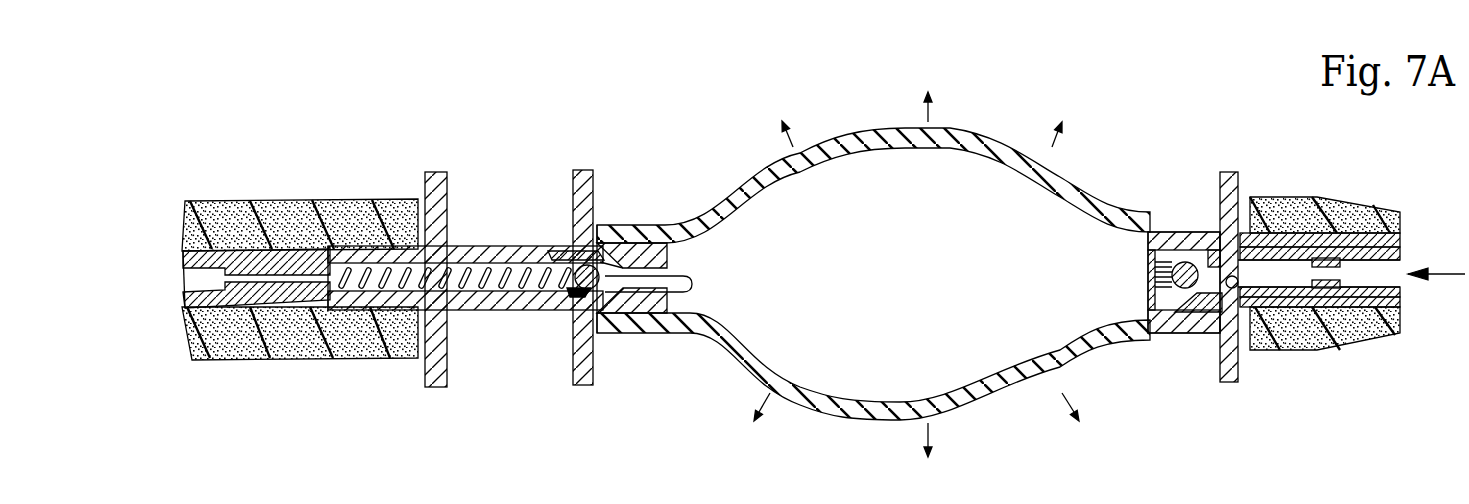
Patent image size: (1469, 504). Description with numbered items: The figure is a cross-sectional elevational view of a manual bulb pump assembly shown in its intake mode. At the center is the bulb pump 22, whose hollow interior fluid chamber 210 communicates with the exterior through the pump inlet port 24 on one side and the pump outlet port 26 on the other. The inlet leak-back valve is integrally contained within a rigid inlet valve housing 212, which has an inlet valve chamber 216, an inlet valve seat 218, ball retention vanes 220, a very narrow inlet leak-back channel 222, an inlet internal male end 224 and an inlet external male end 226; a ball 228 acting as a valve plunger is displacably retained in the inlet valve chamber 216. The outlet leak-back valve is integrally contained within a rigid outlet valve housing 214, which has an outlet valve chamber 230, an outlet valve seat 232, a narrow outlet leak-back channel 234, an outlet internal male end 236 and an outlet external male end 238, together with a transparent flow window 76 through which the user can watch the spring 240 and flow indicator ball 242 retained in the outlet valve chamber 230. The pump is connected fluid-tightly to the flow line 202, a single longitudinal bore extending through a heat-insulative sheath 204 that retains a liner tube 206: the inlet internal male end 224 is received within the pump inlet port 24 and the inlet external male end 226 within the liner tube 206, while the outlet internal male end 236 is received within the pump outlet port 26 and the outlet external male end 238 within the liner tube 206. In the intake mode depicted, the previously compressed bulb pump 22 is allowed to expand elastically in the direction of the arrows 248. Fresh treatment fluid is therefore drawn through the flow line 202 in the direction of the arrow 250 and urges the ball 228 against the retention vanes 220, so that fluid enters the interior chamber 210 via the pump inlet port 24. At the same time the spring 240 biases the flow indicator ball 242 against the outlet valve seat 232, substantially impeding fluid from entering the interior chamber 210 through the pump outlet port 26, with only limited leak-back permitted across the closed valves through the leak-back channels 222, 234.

The bulb pump 22 is at (958, 130).
The pump inlet port 24 is at (1205, 340).
The pump outlet port 26 is at (600, 227).
The transparent flow window 76 is at (458, 315).
The flow line 202 is at (1400, 268).
The heat-insulative sheath 204 is at (297, 363).
The liner tube 206 is at (181, 300).
The interior fluid chamber 210 is at (958, 293).
The inlet valve housing 212 is at (1232, 170).
The outlet valve housing 214 is at (592, 170).
The inlet valve chamber 216 is at (1212, 282).
The inlet valve seat 218 is at (1280, 350).
The ball retention vanes 220 is at (1147, 253).
The inlet leak-back channel 222 is at (1222, 217).
The inlet internal male end 224 is at (1153, 337).
The inlet external male end 226 is at (1332, 293).
The ball 228 is at (1147, 282).
The outlet valve chamber 230 is at (500, 290).
The outlet valve seat 232 is at (575, 290).
The outlet leak-back channel 234 is at (557, 253).
The outlet internal male end 236 is at (672, 257).
The outlet external male end 238 is at (277, 262).
The spring 240 is at (475, 278).
The flow indicator ball 242 is at (643, 280).
The arrows 248 is at (922, 115).
The arrow 250 is at (1443, 277).